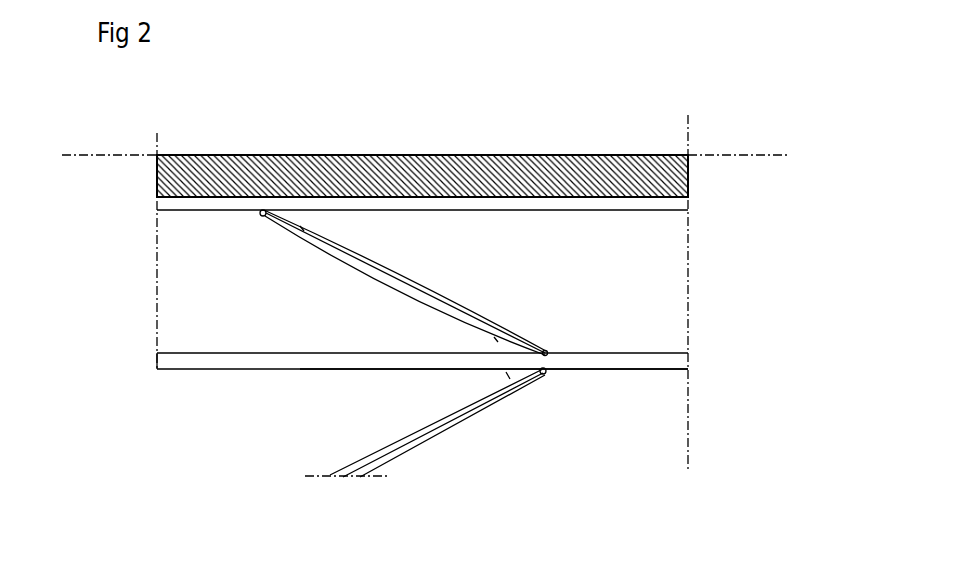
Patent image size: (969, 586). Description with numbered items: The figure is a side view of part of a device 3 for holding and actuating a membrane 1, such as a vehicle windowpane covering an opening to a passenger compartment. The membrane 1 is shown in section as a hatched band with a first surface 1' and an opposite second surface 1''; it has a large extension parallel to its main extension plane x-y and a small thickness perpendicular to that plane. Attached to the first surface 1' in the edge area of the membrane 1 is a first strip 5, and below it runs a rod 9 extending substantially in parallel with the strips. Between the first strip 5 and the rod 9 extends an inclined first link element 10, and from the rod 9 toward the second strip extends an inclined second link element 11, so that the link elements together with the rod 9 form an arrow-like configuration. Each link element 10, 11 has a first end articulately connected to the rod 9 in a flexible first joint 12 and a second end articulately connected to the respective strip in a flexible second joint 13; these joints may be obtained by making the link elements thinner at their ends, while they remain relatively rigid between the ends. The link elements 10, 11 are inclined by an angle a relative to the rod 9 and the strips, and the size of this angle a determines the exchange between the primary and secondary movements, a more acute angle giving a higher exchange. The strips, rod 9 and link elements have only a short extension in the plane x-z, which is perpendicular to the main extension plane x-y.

The membrane 1 is at (384, 137).
The first surface 1' is at (422, 116).
The second opposite surface 1'' is at (136, 448).
The device 3 is at (614, 371).
The first strip 5 is at (650, 207).
The rod 9 is at (585, 360).
The first link elements 10 is at (373, 267).
The second link elements 11 is at (420, 450).
The flexible first joint 12 is at (544, 350).
The flexible second joint 13 is at (267, 211).
The angle a is at (302, 228).
The main extension plane x-y is at (755, 155).
The plane x-z is at (687, 418).